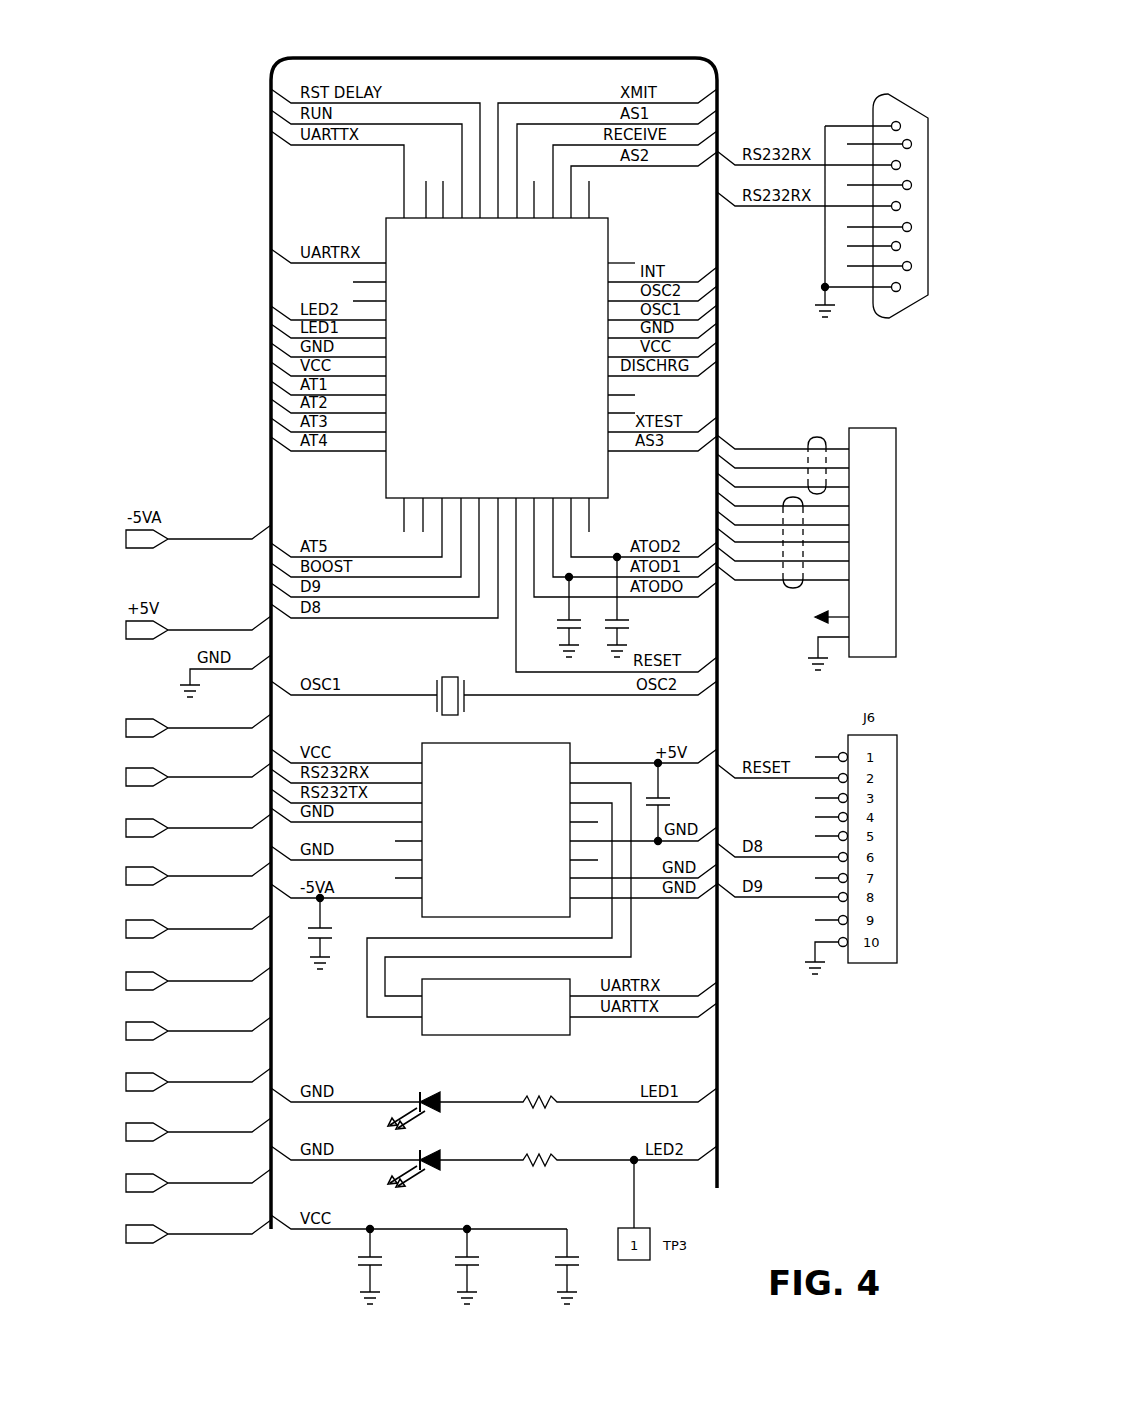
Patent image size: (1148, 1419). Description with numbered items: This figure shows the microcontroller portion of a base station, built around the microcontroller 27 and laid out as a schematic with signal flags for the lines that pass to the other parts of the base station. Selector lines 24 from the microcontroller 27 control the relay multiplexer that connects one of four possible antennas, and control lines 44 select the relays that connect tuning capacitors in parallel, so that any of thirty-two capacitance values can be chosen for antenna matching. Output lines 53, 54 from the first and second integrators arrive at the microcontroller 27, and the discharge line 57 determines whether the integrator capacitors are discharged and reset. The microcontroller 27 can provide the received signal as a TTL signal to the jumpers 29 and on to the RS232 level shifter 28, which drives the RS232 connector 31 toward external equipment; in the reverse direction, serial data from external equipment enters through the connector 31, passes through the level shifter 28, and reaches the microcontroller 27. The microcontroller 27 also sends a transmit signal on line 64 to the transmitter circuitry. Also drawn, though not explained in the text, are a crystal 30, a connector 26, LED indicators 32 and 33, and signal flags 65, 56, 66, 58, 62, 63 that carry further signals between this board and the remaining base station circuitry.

The microcontroller 27 is at (386, 238).
The RS232 level shifter 28 is at (422, 748).
The jumpers 29 is at (570, 1027).
The crystal oscillator 30 is at (452, 677).
The RS232 connector 31 is at (900, 97).
The connector J7 26 is at (855, 428).
The selector lines 24 is at (813, 437).
The control lines 44 is at (796, 588).
The LED1 indicator 32 is at (438, 1094).
The LED2 indicator 33 is at (438, 1154).
The transmit signal line 64 is at (125, 720).
The RUN signal 65 is at (125, 769).
The RECEIVE signal 56 is at (125, 820).
The INT and RST_DELAY signals 66 is at (125, 869).
The discharge line 57 is at (125, 975).
The ATOD0 signal 58 is at (125, 1028).
The output line 54 is at (125, 1079).
The output line 53 is at (125, 1130).
The BOOST signal 62 is at (125, 1180).
The XTEST signal 63 is at (125, 1231).